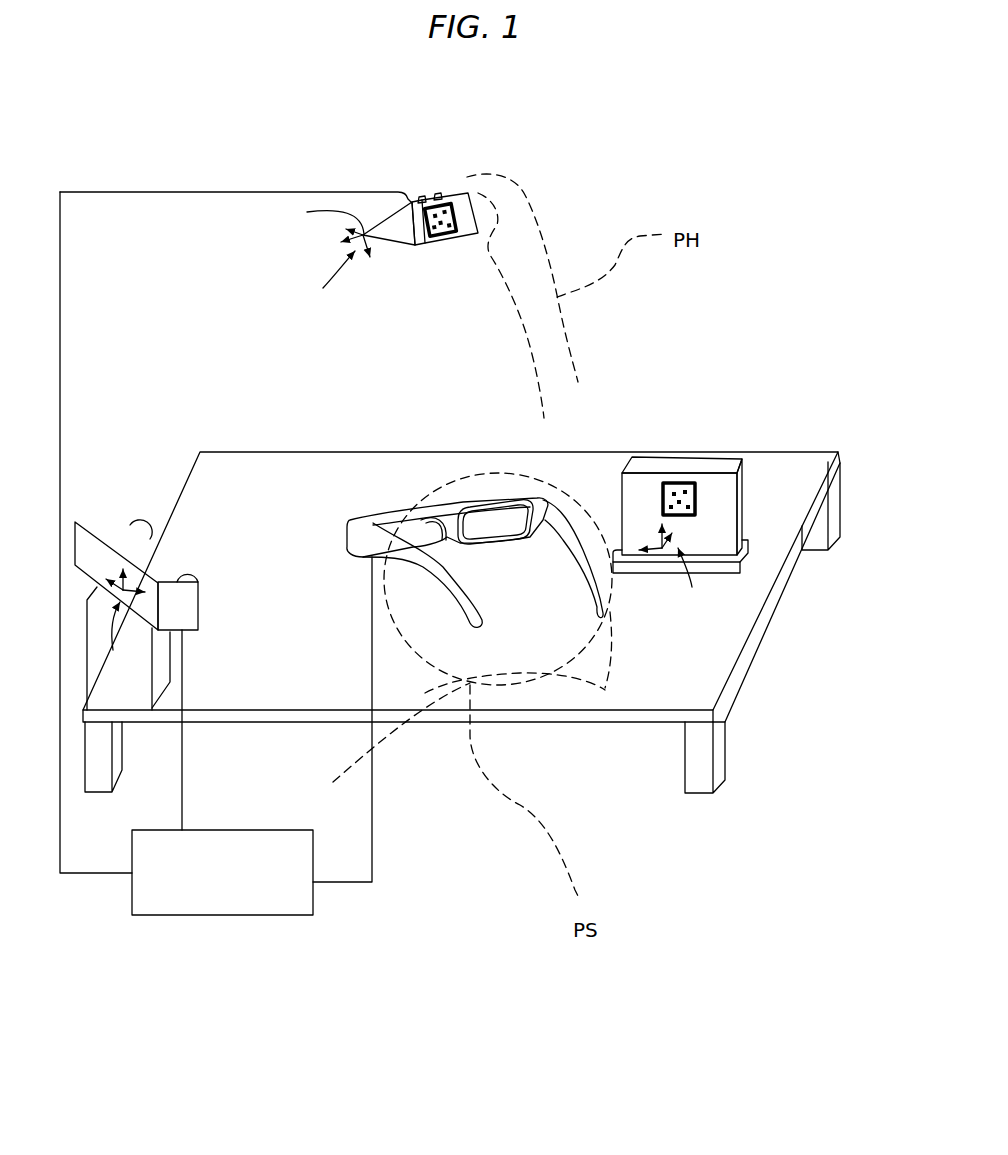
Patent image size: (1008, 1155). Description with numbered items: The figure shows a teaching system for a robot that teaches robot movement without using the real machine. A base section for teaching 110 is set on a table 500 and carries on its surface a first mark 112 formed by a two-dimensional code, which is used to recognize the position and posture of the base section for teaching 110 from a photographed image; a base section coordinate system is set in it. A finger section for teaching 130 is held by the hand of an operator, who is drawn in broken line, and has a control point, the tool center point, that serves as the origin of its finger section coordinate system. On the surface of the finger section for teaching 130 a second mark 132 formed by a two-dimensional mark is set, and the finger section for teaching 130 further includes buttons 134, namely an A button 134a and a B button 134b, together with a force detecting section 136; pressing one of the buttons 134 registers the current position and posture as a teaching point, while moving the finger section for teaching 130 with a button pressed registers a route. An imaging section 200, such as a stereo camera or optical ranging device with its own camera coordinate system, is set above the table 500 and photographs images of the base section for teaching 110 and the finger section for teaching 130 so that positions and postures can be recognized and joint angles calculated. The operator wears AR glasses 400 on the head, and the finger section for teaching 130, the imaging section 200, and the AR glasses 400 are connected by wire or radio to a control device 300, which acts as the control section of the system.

The base section for teaching 110 is at (710, 500).
The first mark 112 is at (693, 498).
The finger section for teaching 130 is at (382, 188).
The second mark 132 is at (432, 250).
The buttons 134 is at (451, 147).
The A button 134a is at (420, 195).
The B button 134b is at (437, 193).
The force detecting section 136 is at (415, 250).
The imaging section 200 is at (102, 516).
The control device 300 is at (178, 917).
The AR glasses 400 is at (352, 527).
The table 500 is at (767, 617).